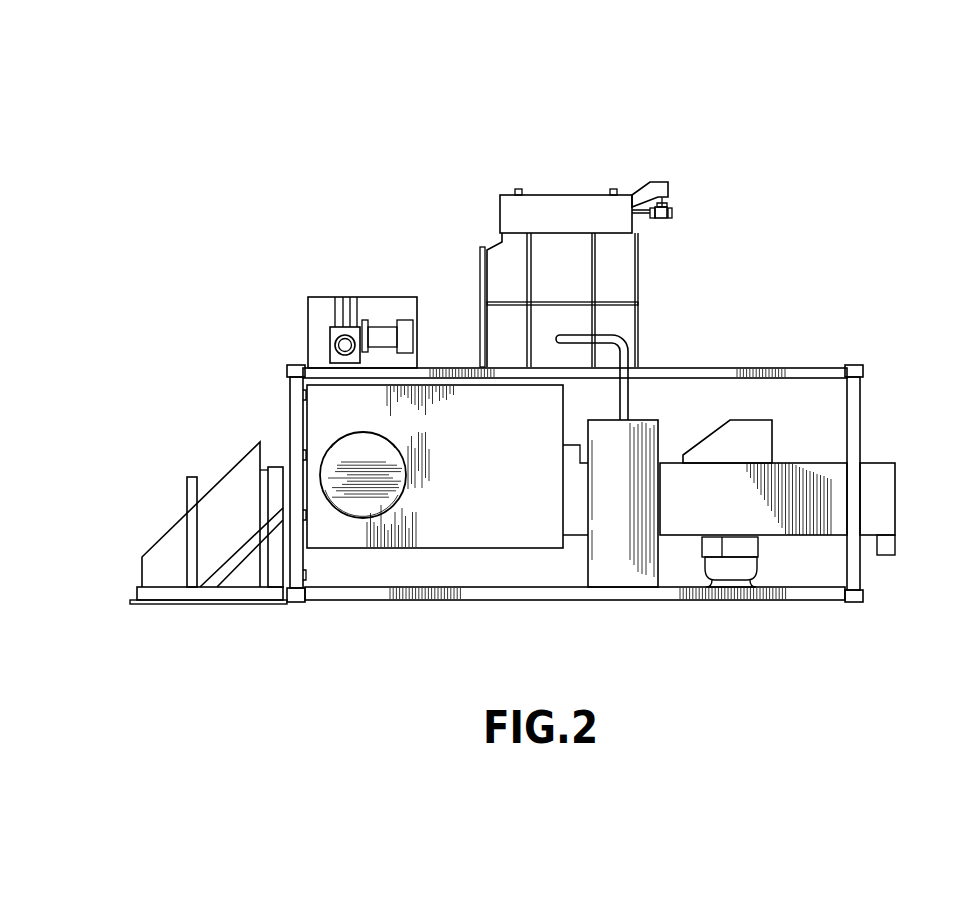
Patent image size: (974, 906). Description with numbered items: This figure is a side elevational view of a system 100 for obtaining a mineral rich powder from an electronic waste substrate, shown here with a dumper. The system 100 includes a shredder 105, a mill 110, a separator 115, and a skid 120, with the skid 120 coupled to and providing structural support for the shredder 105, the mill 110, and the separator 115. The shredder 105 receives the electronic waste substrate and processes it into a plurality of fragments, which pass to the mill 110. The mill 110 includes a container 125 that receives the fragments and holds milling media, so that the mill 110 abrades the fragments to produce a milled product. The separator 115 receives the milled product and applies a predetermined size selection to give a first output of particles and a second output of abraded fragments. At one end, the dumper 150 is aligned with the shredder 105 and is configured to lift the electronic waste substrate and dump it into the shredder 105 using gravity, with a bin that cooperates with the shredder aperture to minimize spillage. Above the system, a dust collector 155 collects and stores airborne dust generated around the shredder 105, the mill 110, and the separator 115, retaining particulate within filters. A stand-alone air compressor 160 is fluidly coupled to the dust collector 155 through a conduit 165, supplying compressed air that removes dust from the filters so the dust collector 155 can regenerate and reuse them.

The system 100 is at (288, 157).
The shredder 105 is at (307, 308).
The mill 110 is at (313, 415).
The separator 115 is at (815, 463).
The skid 120 is at (862, 450).
The container 125 is at (342, 458).
The dumper 150 is at (162, 535).
The dust collector 155 is at (553, 195).
The air compressor 160 is at (658, 558).
The conduit 165 is at (625, 398).